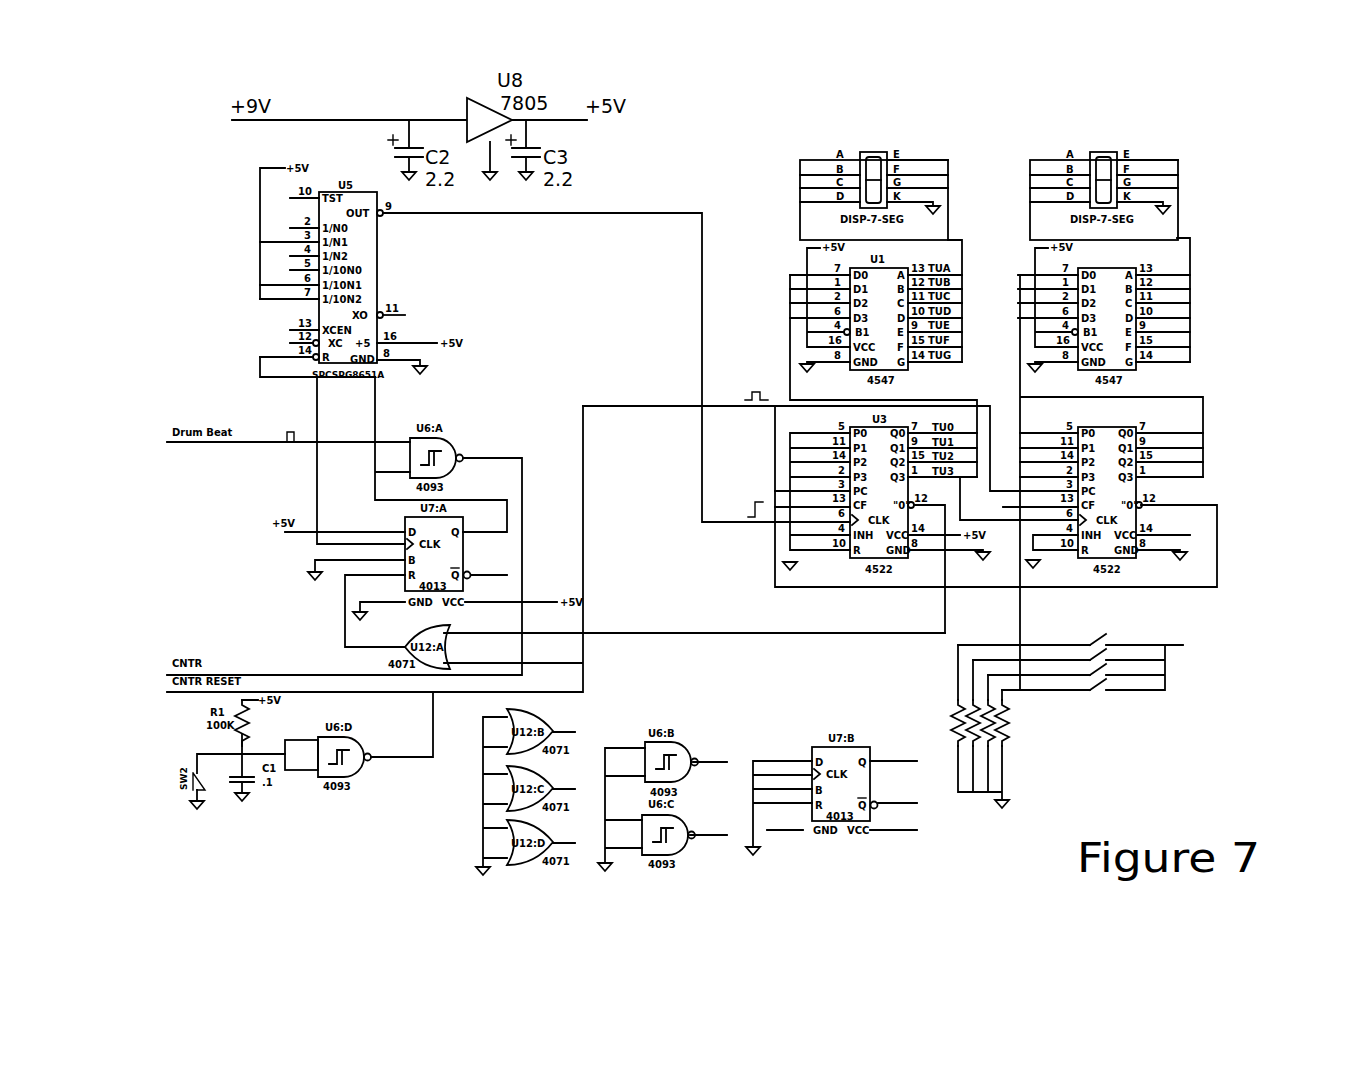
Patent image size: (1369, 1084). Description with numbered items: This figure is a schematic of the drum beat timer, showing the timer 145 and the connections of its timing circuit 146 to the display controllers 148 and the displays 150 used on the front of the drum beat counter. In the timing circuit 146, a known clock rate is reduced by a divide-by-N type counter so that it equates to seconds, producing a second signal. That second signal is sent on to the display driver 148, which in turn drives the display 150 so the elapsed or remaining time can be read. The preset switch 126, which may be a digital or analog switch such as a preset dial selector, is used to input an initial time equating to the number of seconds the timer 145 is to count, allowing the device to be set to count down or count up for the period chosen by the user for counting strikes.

The timer 145 is at (745, 158).
The display 150 is at (1197, 186).
The display controller 148 is at (1208, 298).
The timing circuit 146 is at (1220, 460).
The time period selector 126 is at (1100, 737).